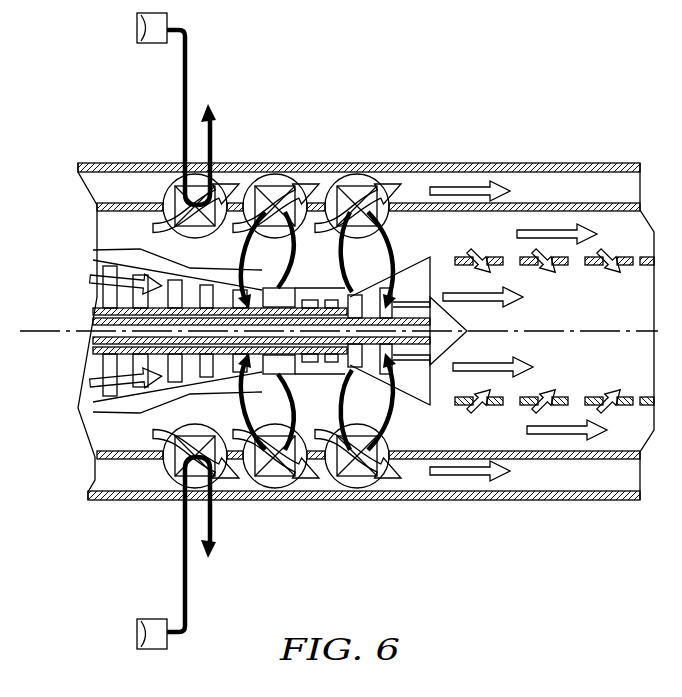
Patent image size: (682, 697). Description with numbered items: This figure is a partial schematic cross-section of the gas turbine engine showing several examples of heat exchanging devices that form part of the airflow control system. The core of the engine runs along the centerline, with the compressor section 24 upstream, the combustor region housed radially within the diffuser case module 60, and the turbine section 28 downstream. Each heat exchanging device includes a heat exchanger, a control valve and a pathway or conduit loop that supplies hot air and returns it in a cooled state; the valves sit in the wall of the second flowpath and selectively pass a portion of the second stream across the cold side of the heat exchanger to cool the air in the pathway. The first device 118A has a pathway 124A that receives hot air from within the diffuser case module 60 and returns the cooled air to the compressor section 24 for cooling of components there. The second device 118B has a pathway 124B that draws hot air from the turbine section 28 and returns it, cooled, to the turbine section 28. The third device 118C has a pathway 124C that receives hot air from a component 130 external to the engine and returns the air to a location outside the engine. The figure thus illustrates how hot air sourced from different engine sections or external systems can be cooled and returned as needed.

The compressor section 24 is at (170, 400).
The turbine section 28 is at (330, 376).
The diffuser case module 60 is at (280, 288).
The heat exchanging device 118A is at (283, 162).
The heat exchanging device 118B is at (362, 162).
The heat exchanging device 118C is at (215, 85).
The pathway 124A is at (96, 251).
The pathway 124B is at (400, 247).
The pathway 124C is at (190, 50).
The component external to the engine 130 is at (137, 32).